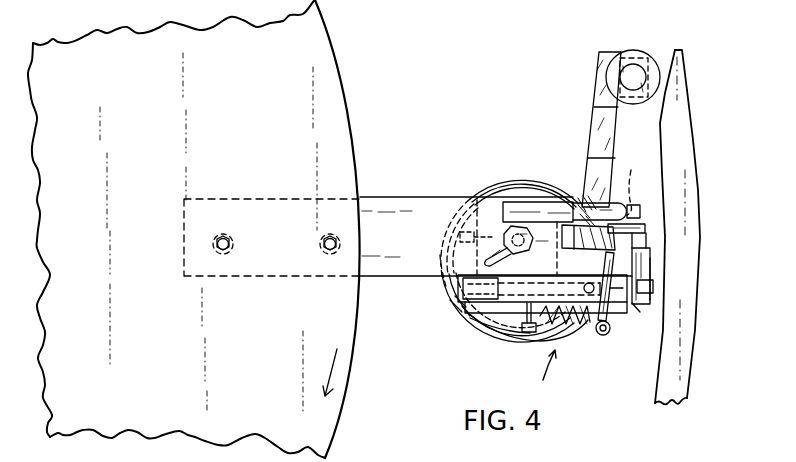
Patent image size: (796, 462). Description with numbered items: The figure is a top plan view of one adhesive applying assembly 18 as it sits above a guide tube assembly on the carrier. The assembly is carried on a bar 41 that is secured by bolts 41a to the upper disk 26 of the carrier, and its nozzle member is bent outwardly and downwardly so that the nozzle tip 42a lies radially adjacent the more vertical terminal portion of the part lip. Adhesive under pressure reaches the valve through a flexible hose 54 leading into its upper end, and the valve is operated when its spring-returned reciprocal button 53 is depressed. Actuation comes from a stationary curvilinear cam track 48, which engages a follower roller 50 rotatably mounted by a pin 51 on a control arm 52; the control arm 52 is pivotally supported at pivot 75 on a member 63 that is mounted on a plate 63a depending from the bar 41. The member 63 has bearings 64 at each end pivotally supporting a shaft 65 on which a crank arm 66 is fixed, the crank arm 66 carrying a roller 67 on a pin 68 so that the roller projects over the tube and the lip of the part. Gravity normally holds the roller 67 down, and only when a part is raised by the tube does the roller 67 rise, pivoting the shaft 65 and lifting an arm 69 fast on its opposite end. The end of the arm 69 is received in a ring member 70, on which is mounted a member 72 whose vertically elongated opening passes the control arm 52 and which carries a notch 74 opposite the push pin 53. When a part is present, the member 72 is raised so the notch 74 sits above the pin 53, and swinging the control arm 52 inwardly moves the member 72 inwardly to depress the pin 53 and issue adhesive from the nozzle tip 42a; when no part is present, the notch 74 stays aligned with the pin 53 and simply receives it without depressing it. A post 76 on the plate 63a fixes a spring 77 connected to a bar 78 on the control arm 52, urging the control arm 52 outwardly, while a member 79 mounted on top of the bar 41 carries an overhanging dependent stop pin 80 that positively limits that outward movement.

The adhesive applying assembly 18 is at (544, 378).
The upper disk 26 is at (343, 98).
The bar 41 is at (399, 207).
The bolts 41a is at (328, 252).
The nozzle tip 42a is at (478, 197).
The cam track 48 is at (690, 335).
The follower roller 50 is at (636, 50).
The pin 51 is at (644, 73).
The control arm 52 is at (597, 80).
The button 53 is at (586, 200).
The flexible hose 54 is at (522, 254).
The member 63 is at (470, 326).
The plate 63a is at (505, 346).
The bearings 64 is at (463, 306).
The shaft 65 is at (492, 336).
The crank arm 66 is at (450, 302).
The roller 67 is at (447, 290).
The pin 68 is at (444, 282).
The arm 69 is at (644, 265).
The ring member 70 is at (643, 255).
The member 72 is at (640, 222).
The notch 74 is at (580, 200).
The pivot 75 is at (586, 335).
The post 76 is at (529, 336).
The spring 77 is at (604, 338).
The bar 78 is at (612, 338).
The member 79 is at (522, 210).
The stop pin 80 is at (631, 176).